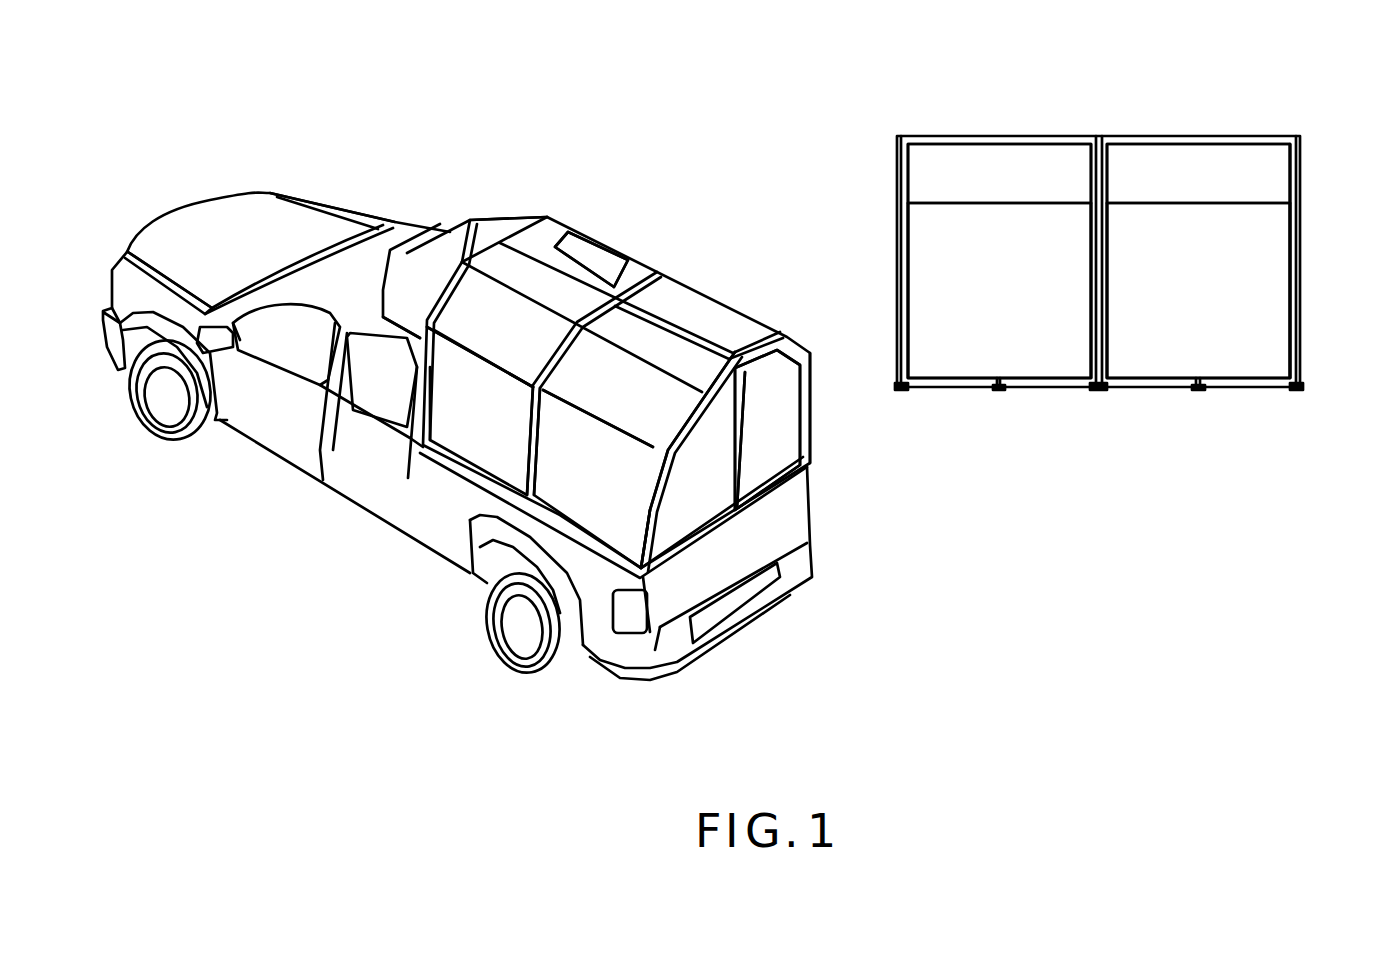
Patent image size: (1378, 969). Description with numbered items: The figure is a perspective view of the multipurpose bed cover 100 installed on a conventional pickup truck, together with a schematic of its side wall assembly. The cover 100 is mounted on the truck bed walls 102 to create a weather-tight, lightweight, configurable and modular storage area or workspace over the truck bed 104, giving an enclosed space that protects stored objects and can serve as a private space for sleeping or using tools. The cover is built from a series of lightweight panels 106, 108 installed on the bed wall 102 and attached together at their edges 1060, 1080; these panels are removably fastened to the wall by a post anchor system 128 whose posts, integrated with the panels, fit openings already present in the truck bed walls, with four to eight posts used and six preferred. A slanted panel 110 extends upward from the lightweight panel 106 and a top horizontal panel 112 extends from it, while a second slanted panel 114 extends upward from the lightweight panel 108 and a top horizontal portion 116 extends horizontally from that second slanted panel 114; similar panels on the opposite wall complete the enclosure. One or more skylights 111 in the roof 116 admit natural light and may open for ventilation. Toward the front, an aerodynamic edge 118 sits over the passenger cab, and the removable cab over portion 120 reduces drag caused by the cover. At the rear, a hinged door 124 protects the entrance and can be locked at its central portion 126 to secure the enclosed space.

The multipurpose bed cover 100 is at (680, 226).
The truck bed walls 102 is at (462, 517).
The truck bed 104 is at (830, 481).
The lightweight panel 106 is at (602, 497).
The lightweight panel 108 is at (500, 433).
The slanted panel 110 is at (657, 425).
The skylight 111 is at (600, 247).
The top horizontal panel 112 is at (673, 352).
The second slanted panel 114 is at (500, 318).
The top horizontal portion 116 is at (537, 283).
The aerodynamic edge 118 is at (417, 230).
The cab over portion 120 is at (350, 277).
The hinged door 124 is at (753, 438).
The central portion 126 is at (740, 415).
The post anchor system 128 is at (1003, 393).
The edge 1060 is at (548, 445).
The edge 1080 is at (548, 517).